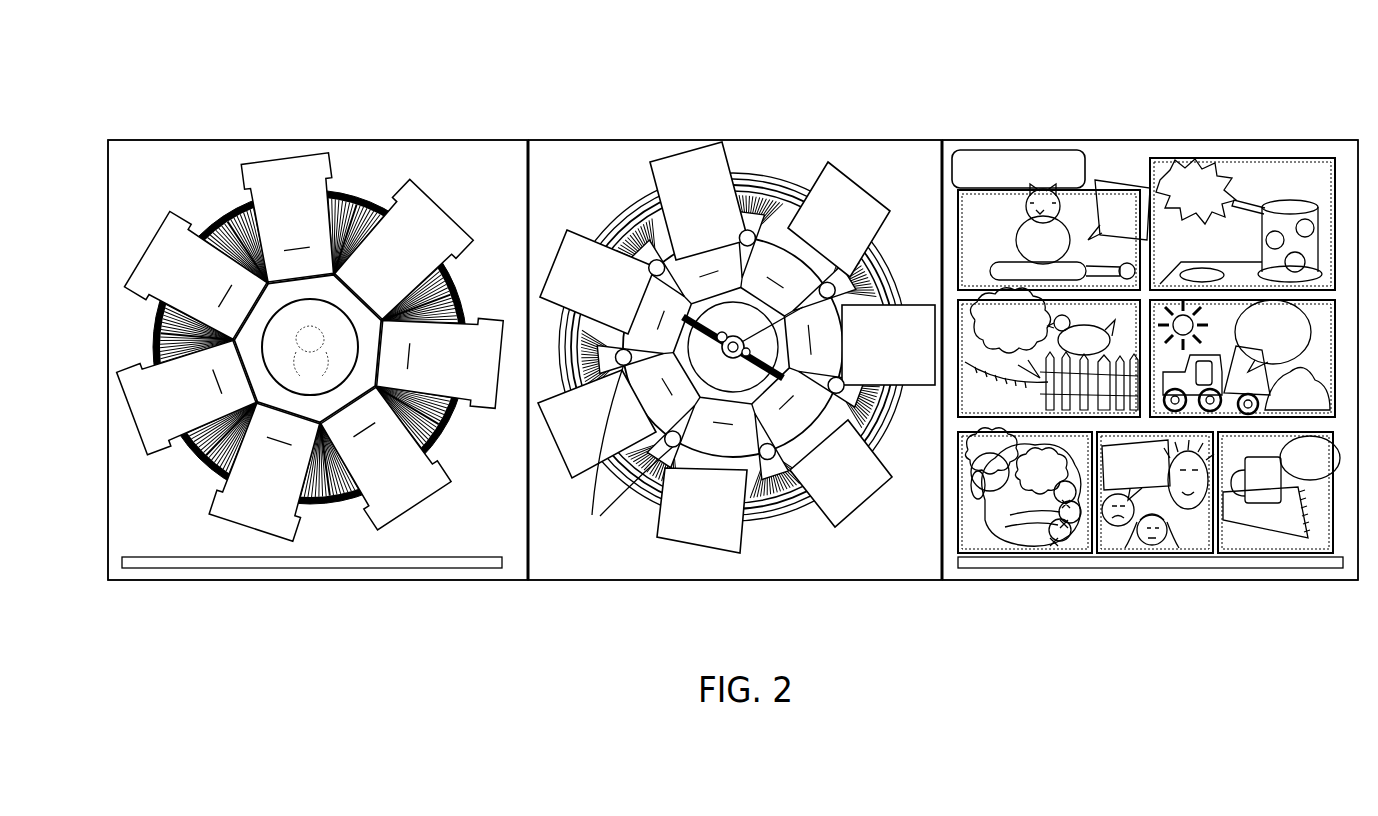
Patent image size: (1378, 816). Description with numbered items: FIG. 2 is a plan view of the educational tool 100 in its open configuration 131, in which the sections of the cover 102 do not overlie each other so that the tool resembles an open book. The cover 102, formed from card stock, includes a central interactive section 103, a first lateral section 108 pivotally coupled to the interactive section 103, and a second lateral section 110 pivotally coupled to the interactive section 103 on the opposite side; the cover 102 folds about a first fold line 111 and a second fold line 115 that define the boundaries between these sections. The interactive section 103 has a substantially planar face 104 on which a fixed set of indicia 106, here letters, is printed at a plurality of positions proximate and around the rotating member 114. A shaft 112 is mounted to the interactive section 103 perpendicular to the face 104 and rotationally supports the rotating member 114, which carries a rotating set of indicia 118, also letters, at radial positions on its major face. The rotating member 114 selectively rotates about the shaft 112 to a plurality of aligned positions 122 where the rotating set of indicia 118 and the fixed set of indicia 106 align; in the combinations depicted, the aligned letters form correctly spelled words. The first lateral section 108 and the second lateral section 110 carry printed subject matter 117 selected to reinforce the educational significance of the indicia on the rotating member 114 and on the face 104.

The educational tool 100 is at (372, 88).
The cover 102 is at (338, 122).
The interactive section 103 is at (568, 155).
The face 104 is at (642, 155).
The fixed set of indicia 106 is at (866, 221).
The first lateral section 108 is at (184, 142).
The second lateral section 110 is at (1268, 150).
The first fold line 111 is at (527, 190).
The shaft 112 is at (786, 238).
The rotating member 114 is at (775, 215).
The second fold line 115 is at (941, 173).
The printed subject matter 117 is at (456, 202).
The rotating set of indicia 118 is at (711, 383).
The aligned positions 122 is at (853, 369).
The open configuration 131 is at (873, 116).